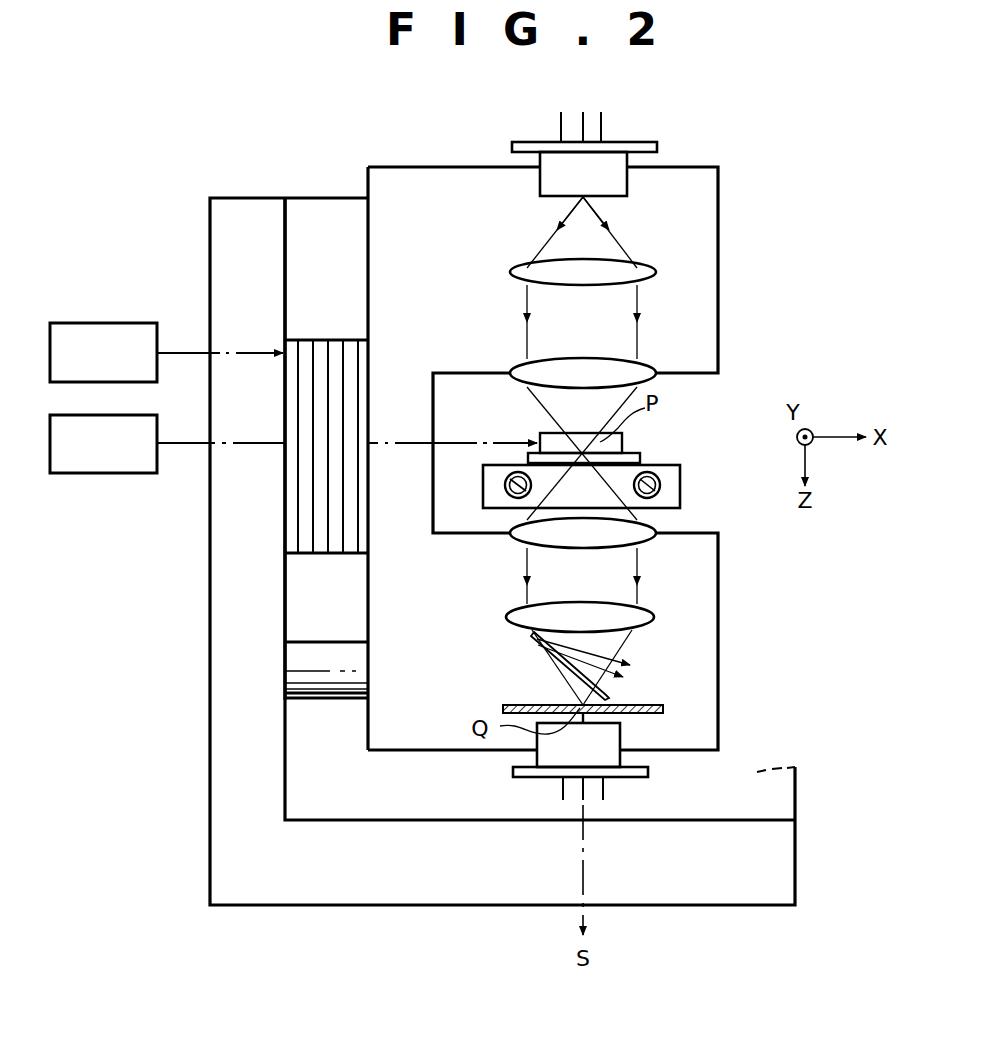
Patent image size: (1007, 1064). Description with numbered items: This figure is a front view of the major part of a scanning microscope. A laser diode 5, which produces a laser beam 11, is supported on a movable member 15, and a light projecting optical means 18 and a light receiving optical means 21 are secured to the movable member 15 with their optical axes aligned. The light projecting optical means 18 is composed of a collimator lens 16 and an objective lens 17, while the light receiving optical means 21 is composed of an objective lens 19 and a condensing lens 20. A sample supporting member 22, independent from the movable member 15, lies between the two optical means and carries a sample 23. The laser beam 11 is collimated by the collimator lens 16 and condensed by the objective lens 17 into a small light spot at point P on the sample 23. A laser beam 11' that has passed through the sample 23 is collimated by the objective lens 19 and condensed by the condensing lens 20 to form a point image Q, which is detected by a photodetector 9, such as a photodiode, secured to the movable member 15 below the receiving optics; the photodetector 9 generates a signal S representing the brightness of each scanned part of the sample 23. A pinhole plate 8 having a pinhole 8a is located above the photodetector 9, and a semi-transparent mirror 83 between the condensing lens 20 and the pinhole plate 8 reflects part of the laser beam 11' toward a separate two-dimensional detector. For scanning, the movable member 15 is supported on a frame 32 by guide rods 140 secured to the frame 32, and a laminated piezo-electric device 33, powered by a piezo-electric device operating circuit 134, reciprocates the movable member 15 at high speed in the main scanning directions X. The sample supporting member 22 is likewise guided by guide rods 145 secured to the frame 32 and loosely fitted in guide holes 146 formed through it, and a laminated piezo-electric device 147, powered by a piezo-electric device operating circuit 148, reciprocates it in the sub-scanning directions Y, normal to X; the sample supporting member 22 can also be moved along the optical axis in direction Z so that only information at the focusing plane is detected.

The laser diode 5 is at (606, 156).
The pinhole plate 8 is at (662, 705).
The pinhole 8a is at (578, 698).
The photodetector 9 is at (620, 740).
The laser beam 11 is at (558, 358).
The laser beam (transmitted) 11' is at (547, 626).
The movable member 15 is at (428, 178).
The collimator lens 16 is at (656, 270).
The objective lens 17 is at (640, 365).
The light projecting optical means 18 is at (669, 310).
The objective lens 19 is at (646, 545).
The condensing lens 20 is at (656, 620).
The light receiving optical means 21 is at (671, 579).
The sample supporting member 22 is at (682, 488).
The sample 23 is at (640, 460).
The frame 32 is at (286, 197).
The laminated piezo-electric device 33 is at (322, 546).
The semi-transparent mirror 83 is at (534, 636).
The piezo-electric device operating circuit 134 is at (166, 352).
The guide rods 140 is at (298, 655).
The guide rods 145 is at (660, 491).
The guide holes 146 is at (656, 478).
The laminated piezo-electric device 147 is at (562, 432).
The piezo-electric device operating circuit 148 is at (293, 444).